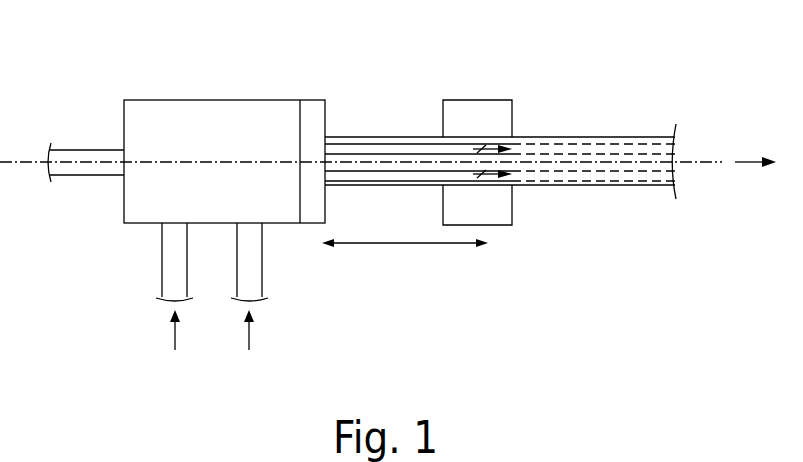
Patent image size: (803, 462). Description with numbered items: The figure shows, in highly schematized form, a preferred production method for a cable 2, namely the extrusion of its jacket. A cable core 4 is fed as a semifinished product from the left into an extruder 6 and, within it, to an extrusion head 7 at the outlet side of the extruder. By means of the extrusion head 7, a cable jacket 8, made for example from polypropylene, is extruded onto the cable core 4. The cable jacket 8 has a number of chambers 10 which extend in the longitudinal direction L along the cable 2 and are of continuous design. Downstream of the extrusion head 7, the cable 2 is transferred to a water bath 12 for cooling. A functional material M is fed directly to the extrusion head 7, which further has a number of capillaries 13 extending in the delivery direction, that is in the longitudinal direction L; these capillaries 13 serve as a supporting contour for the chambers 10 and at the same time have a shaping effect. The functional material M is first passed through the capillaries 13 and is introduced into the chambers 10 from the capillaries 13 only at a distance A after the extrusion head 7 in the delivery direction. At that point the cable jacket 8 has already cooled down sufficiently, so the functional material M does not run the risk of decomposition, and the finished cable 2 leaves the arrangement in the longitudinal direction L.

The cable 2 is at (689, 116).
The cable core 4 is at (75, 148).
The extruder 6 is at (213, 86).
The extrusion head 7 is at (310, 100).
The cable jacket 8 is at (342, 137).
The chambers 10 is at (592, 143).
The water bath 12 is at (480, 90).
The capillaries 13 is at (393, 143).
The functional material M is at (537, 150).
The distance A is at (380, 247).
The longitudinal direction L is at (750, 166).